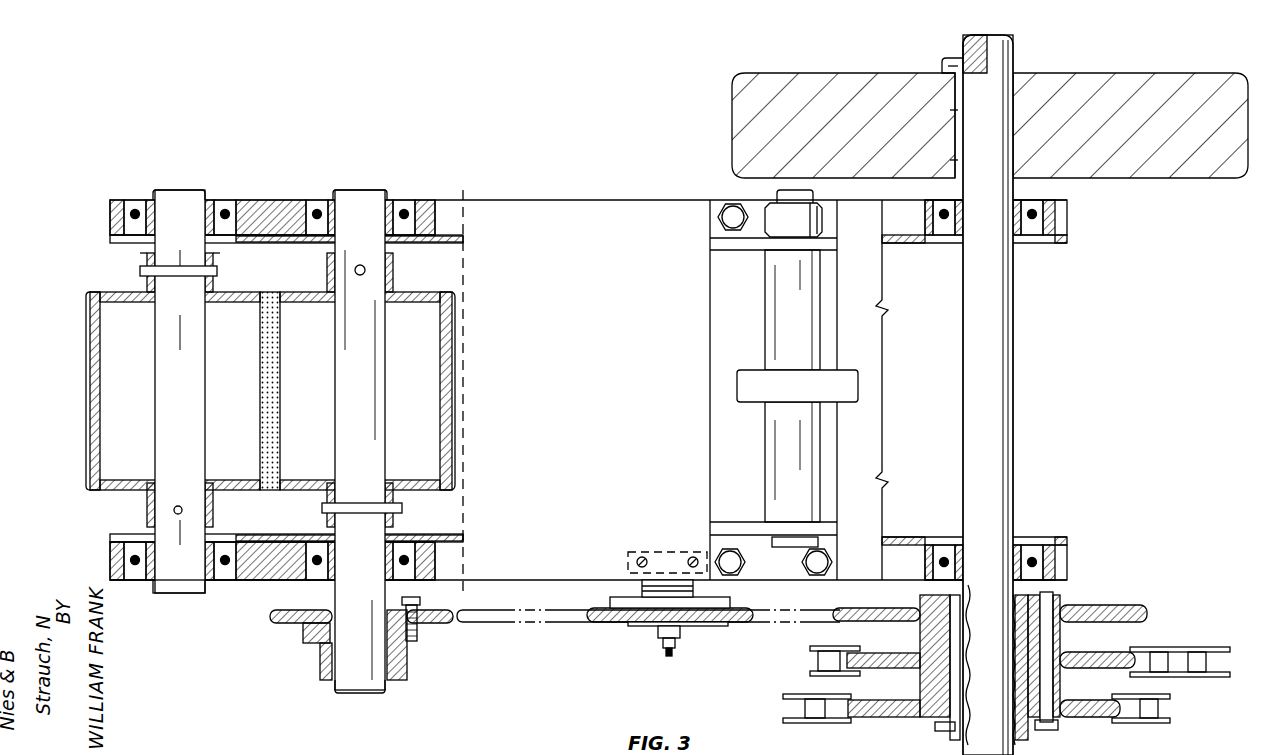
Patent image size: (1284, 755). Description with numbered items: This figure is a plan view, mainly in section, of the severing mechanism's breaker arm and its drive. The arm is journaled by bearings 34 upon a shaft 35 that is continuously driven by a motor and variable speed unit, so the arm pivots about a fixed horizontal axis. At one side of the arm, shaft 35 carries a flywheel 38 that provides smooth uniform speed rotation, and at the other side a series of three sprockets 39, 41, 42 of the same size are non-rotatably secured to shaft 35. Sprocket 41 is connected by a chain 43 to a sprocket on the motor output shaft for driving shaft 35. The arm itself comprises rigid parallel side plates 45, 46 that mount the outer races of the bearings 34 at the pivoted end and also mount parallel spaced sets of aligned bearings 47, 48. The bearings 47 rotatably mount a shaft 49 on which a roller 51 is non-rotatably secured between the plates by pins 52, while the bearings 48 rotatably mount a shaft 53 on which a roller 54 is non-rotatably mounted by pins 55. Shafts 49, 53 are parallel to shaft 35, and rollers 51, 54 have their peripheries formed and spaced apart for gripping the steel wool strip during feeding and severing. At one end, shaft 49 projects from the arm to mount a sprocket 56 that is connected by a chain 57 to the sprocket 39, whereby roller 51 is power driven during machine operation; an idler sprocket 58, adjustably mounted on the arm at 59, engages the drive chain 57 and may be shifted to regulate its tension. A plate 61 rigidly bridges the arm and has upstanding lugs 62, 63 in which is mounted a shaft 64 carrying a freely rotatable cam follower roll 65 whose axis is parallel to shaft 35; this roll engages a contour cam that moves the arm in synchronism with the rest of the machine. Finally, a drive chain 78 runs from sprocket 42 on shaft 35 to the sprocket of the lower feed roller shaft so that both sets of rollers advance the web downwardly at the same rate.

The bearings 34 is at (1062, 204).
The shaft 35 is at (1000, 397).
The flywheel 38 is at (990, 125).
The sprocket 39 is at (1088, 607).
The sprocket 41 is at (1082, 653).
The sprocket 42 is at (1070, 703).
The chain 43 is at (1168, 678).
The side plate 45 is at (912, 241).
The side plate 46 is at (455, 537).
The bearings 47 is at (404, 208).
The bearings 48 is at (220, 210).
The shaft 49 is at (360, 441).
The roller 51 is at (455, 402).
The pins 52 is at (402, 508).
The shaft 53 is at (179, 391).
The roller 54 is at (93, 380).
The pins 55 is at (219, 270).
The sprocket 56 is at (395, 657).
The chain 57 is at (483, 626).
The idler sprocket 58 is at (616, 624).
The adjustable mounting 59 is at (683, 640).
The plate 61 is at (716, 455).
The lug 62 is at (720, 250).
The lug 63 is at (727, 528).
The shaft 64 is at (793, 368).
The cam follower roll 65 is at (752, 385).
The drive chain 78 is at (820, 723).